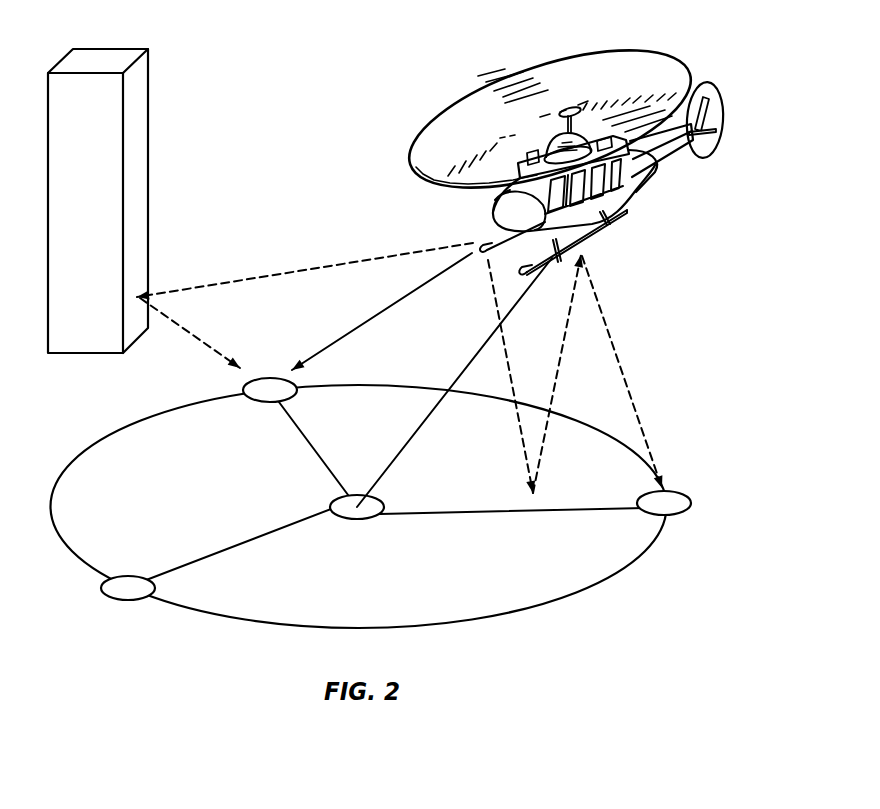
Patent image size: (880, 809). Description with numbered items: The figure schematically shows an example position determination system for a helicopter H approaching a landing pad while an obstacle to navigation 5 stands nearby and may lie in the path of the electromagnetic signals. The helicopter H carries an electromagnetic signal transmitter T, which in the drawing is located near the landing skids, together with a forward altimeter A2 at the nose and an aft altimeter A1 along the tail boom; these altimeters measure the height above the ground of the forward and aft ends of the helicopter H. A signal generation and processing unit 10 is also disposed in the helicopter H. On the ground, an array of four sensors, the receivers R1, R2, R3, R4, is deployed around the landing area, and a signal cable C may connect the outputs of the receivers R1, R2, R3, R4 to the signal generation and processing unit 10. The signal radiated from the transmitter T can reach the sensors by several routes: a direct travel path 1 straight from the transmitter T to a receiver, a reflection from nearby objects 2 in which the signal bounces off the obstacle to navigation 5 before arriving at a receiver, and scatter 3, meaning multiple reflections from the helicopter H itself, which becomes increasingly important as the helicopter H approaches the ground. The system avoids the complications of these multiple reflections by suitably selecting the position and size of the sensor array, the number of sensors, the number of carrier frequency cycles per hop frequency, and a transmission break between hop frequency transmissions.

The obstacle to navigation 5 is at (150, 162).
The signal cable C is at (452, 434).
The receiver R1 is at (357, 495).
The receiver R2 is at (692, 503).
The receiver R3 is at (270, 378).
The receiver R4 is at (128, 576).
The direct travel path 1 is at (422, 380).
The reflection from nearby objects 2 is at (305, 301).
The scatter 3 is at (575, 374).
The helicopter H is at (565, 152).
The aft altimeter A1 is at (663, 142).
The forward altimeter A2 is at (507, 213).
The signal generation and processing unit 10 is at (613, 217).
The electromagnetic signal transmitter T is at (530, 270).